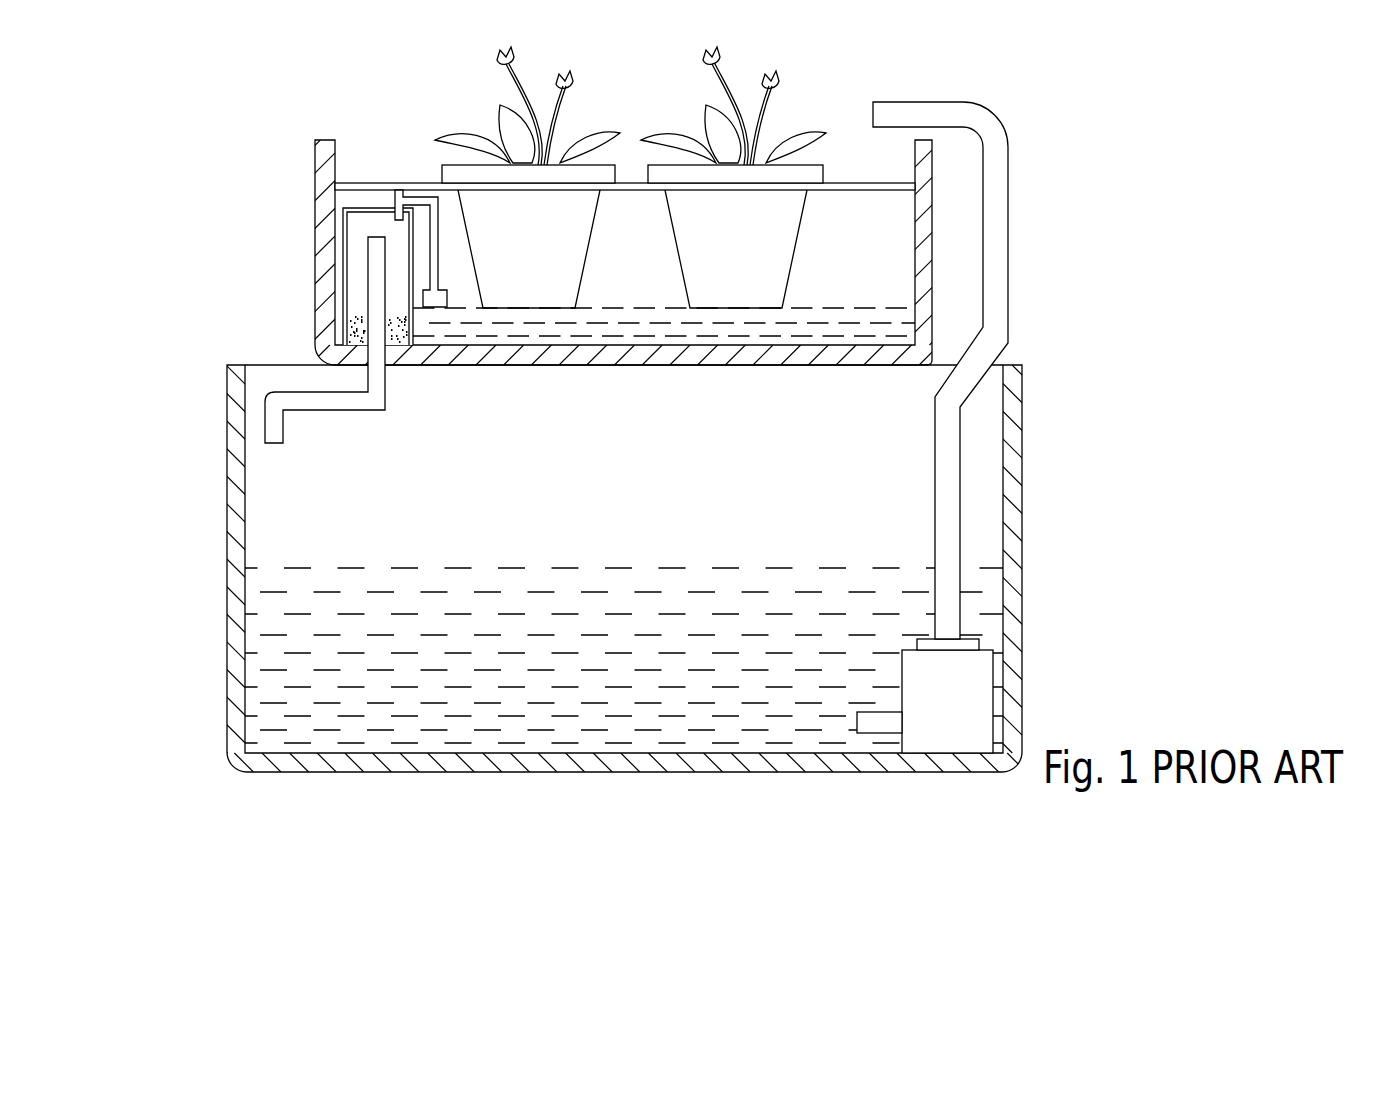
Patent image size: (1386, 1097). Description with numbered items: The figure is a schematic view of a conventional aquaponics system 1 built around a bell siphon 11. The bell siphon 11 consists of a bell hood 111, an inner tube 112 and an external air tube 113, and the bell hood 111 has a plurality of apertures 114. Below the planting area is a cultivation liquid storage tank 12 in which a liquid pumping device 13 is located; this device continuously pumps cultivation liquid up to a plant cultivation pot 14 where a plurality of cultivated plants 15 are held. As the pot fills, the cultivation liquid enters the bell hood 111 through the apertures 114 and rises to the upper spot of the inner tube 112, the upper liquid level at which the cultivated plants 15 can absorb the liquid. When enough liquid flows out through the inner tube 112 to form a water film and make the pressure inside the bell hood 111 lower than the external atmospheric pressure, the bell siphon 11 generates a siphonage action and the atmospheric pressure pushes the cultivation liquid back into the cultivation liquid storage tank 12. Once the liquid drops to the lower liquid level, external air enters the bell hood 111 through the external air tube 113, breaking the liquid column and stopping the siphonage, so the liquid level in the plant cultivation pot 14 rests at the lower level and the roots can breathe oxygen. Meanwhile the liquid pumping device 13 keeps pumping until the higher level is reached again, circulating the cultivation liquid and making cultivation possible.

The aquaponics system 1 is at (693, 409).
The bell siphon 11 is at (624, 291).
The bell hood 111 is at (343, 227).
The inner tube 112 is at (370, 258).
The external air tube 113 is at (399, 197).
The apertures 114 is at (345, 343).
The cultivation liquid storage tank 12 is at (1010, 488).
The liquid pumping device 13 is at (993, 668).
The plant cultivation pot 14 is at (934, 289).
The cultivated plants 15 is at (785, 72).